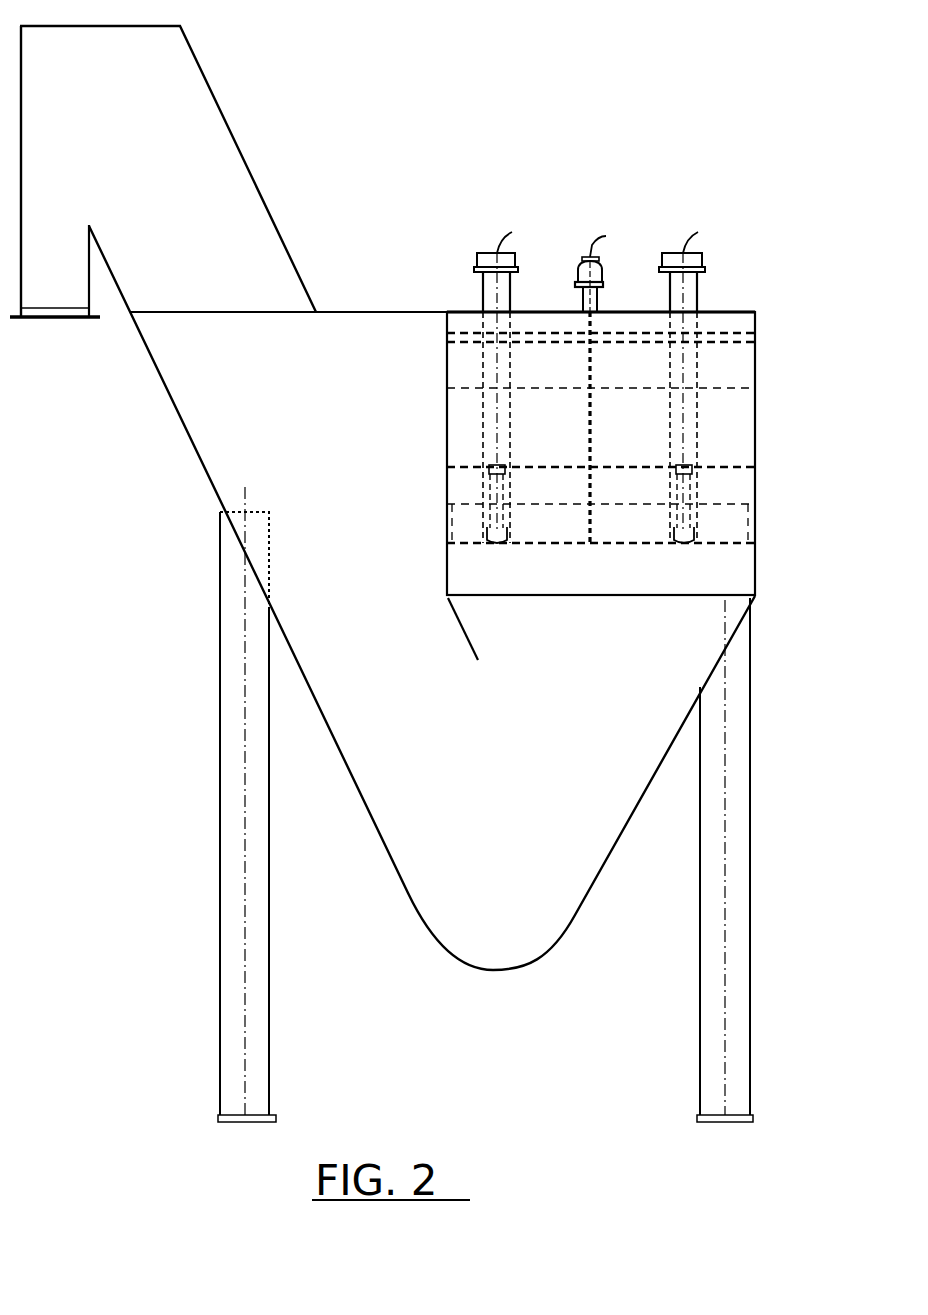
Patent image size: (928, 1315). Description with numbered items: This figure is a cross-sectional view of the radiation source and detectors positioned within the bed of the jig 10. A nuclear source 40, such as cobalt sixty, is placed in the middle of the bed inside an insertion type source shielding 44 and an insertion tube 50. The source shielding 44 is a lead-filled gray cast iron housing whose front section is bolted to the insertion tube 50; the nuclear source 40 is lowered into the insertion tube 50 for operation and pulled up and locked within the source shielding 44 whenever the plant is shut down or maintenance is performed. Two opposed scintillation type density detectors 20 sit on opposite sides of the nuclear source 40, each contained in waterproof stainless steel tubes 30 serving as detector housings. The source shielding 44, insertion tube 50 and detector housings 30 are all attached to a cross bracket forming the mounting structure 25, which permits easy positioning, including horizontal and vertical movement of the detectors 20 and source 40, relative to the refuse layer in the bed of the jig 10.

The jig 10 is at (755, 311).
The scintillation type density detectors 20 is at (487, 497).
The mounting structure 25 is at (541, 320).
The stainless steel tubes 30 is at (485, 382).
The nuclear source 40 is at (592, 500).
The source shielding 44 is at (592, 252).
The insertion tube 50 is at (590, 545).